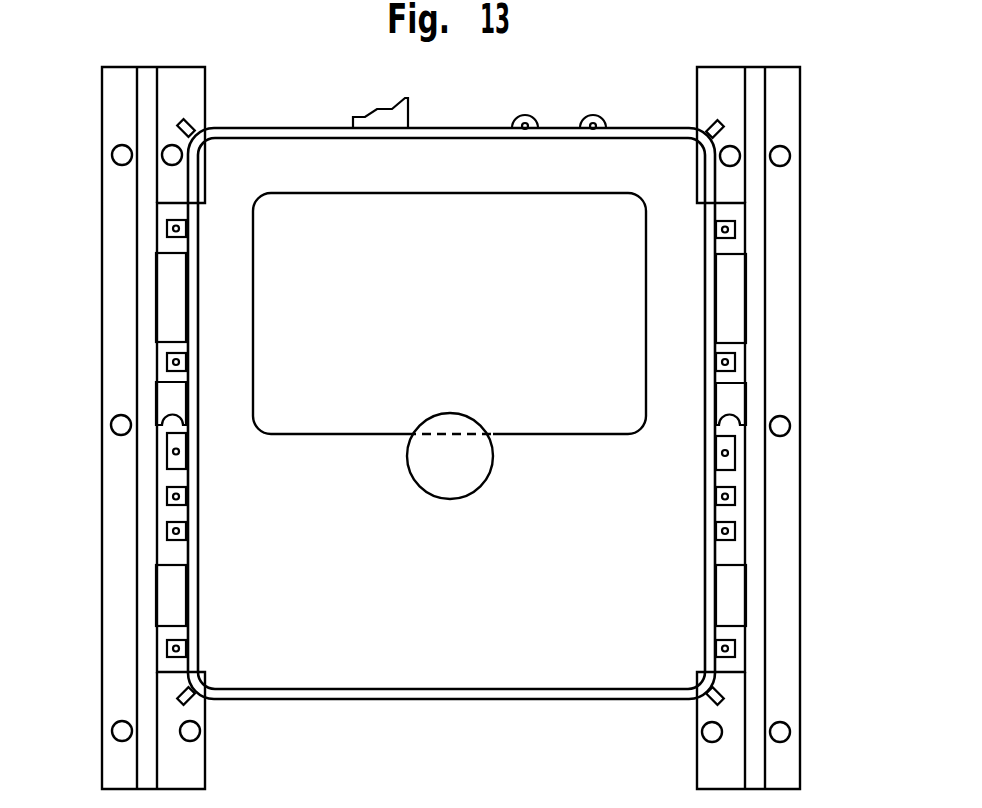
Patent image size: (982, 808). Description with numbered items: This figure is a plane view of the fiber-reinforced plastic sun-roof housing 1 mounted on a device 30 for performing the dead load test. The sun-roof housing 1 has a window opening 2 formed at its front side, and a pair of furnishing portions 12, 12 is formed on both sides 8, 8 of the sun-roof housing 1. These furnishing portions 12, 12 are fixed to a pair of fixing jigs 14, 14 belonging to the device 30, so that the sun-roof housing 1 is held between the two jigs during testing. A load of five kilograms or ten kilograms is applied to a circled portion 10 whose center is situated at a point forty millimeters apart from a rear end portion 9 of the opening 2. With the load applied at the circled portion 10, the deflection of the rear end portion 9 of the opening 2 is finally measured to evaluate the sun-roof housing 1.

The sun-roof housing 1 is at (670, 585).
The window opening 2 is at (297, 222).
The sides of the sun-roof housing 8 is at (185, 298).
The rear end portion of the opening 9 is at (450, 434).
The circled portion 10 is at (492, 457).
The furnishing portions 12 is at (165, 230).
The fixing jigs 14 is at (147, 117).
The device for performing the dead load test 30 is at (805, 676).